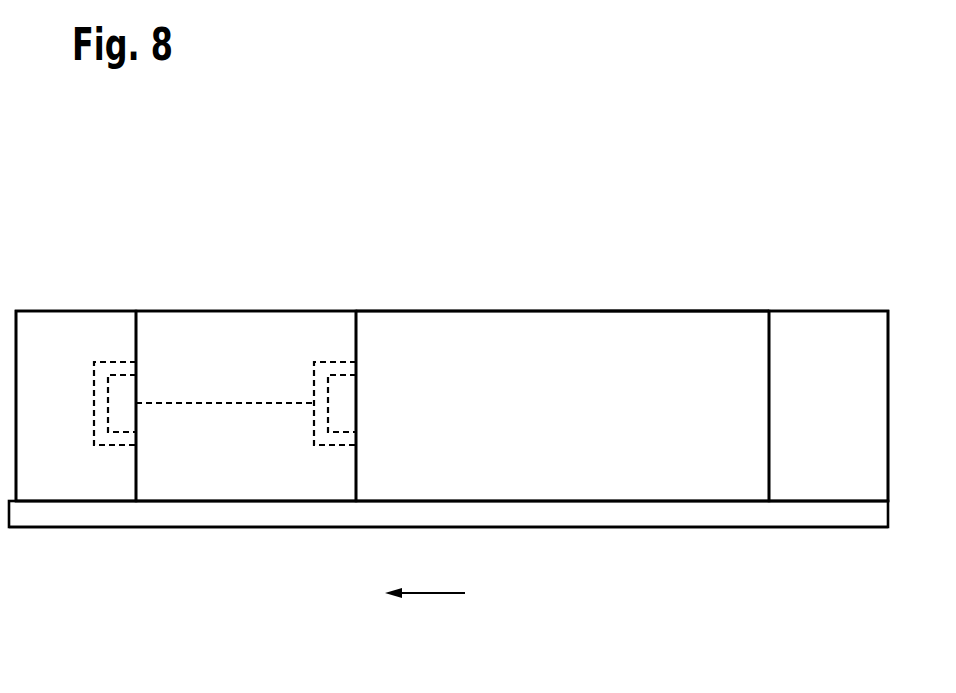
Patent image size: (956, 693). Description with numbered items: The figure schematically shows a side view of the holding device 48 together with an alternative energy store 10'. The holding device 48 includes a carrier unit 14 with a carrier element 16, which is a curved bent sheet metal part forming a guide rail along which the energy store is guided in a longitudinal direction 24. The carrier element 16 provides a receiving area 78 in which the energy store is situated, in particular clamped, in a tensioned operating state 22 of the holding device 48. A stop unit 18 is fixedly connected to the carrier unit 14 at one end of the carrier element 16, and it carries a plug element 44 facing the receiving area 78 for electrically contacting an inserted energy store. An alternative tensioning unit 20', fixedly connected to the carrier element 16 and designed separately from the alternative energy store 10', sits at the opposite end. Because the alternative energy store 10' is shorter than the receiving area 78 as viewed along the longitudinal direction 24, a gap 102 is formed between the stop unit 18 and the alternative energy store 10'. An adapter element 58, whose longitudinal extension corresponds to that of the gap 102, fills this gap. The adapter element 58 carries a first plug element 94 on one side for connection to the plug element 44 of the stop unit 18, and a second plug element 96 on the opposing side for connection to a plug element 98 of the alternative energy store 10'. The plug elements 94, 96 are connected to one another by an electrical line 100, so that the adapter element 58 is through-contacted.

The alternative energy store 10' is at (452, 365).
The carrier unit 14 is at (537, 514).
The carrier element 16 is at (622, 514).
The stop unit 18 is at (46, 328).
The alternative tensioning unit 20' is at (828, 365).
The tensioned operating state 22 is at (605, 249).
The longitudinal direction 24 is at (433, 594).
The plug element 44 is at (110, 362).
The holding device 48 is at (673, 201).
The adapter element 58 is at (180, 328).
The receiving area 78 is at (422, 386).
The first plug element 94 is at (109, 432).
The second plug element 96 is at (328, 362).
The plug element 98 is at (330, 432).
The electrical line 100 is at (208, 404).
The gap 102 is at (244, 332).